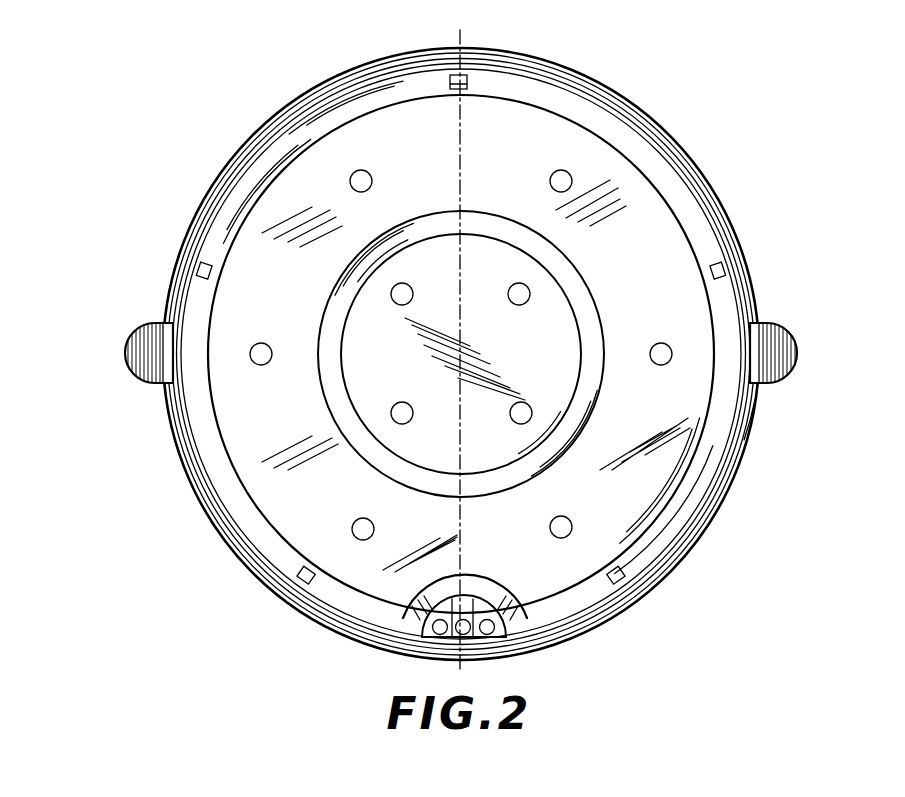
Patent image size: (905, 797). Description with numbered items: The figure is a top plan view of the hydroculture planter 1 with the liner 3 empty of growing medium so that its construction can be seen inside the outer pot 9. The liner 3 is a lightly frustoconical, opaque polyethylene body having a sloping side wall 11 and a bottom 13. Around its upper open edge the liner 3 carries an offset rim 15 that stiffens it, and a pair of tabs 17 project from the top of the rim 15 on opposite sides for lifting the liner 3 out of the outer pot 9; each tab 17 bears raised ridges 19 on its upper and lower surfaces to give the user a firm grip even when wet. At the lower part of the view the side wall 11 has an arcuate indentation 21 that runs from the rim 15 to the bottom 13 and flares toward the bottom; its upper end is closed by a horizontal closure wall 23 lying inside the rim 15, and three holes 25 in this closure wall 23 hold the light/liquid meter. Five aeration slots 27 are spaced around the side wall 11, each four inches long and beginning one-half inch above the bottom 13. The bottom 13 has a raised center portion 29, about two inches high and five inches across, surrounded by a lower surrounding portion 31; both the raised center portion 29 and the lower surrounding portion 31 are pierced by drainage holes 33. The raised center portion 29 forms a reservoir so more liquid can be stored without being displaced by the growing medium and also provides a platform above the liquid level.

The hydroculture planter 1 is at (128, 259).
The liner 3 is at (460, 30).
The outer pot 9 is at (766, 419).
The side wall 11 is at (688, 202).
The bottom 13 is at (618, 203).
The offset rim 15 is at (232, 165).
The tabs 17 is at (127, 370).
The raised ridges 19 is at (150, 340).
The arcuate indentation 21 is at (498, 598).
The horizontal closure wall 23 is at (483, 612).
The holes 25 is at (487, 630).
The aeration slots 27 is at (200, 266).
The raised center portion 29 is at (383, 357).
The lower surrounding portion 31 is at (392, 163).
The drainage holes 33 is at (356, 174).